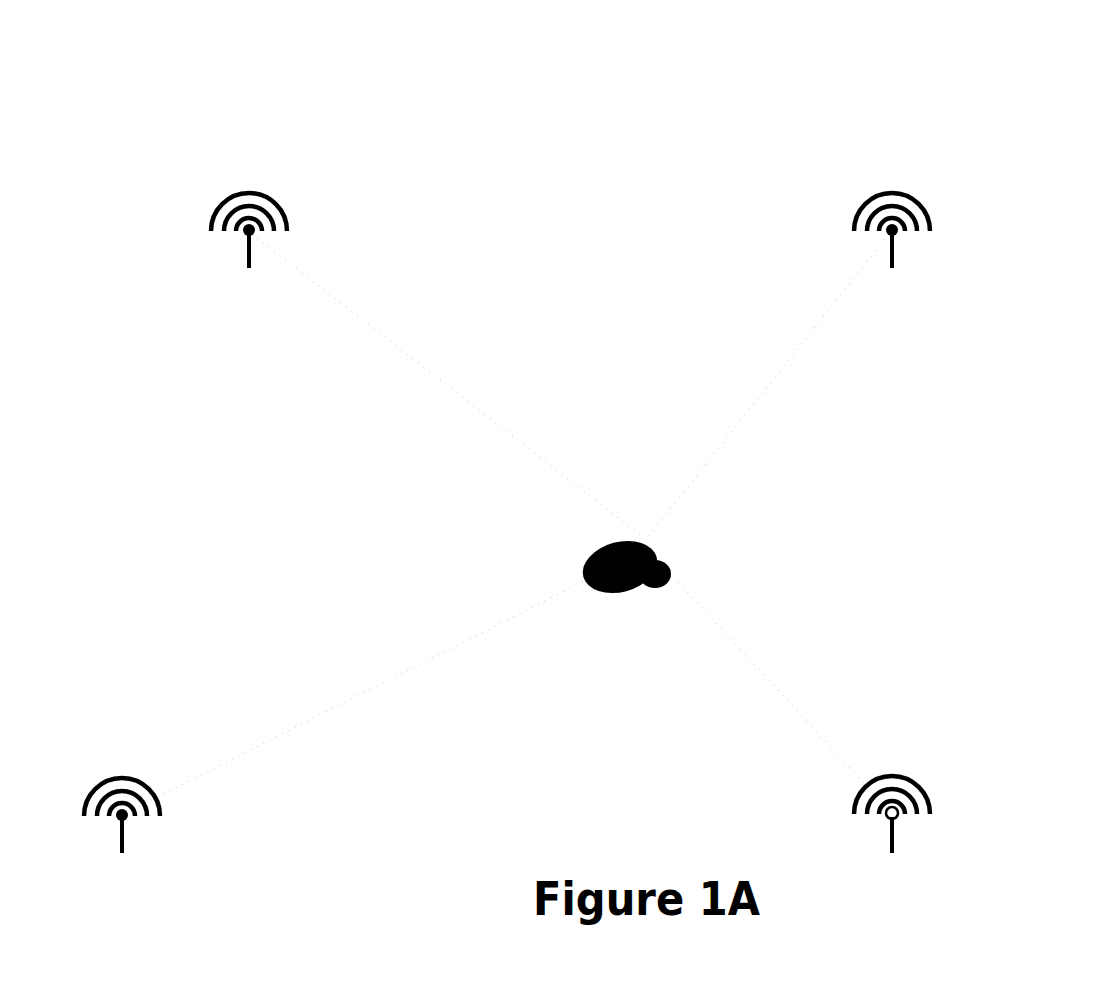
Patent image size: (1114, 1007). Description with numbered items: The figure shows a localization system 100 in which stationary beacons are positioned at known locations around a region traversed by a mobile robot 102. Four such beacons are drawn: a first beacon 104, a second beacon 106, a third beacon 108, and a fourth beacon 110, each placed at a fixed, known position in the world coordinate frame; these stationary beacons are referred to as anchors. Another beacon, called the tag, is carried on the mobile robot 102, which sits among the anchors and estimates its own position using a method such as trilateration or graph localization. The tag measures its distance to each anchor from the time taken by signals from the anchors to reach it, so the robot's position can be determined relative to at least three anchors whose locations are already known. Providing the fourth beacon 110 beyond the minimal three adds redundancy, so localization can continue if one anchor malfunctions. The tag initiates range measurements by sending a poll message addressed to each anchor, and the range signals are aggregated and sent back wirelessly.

The localization system 100 is at (228, 113).
The mobile robot 102 is at (670, 563).
The first beacon 104 is at (988, 839).
The second beacon 106 is at (988, 267).
The third beacon 108 is at (202, 252).
The fourth beacon 110 is at (222, 848).